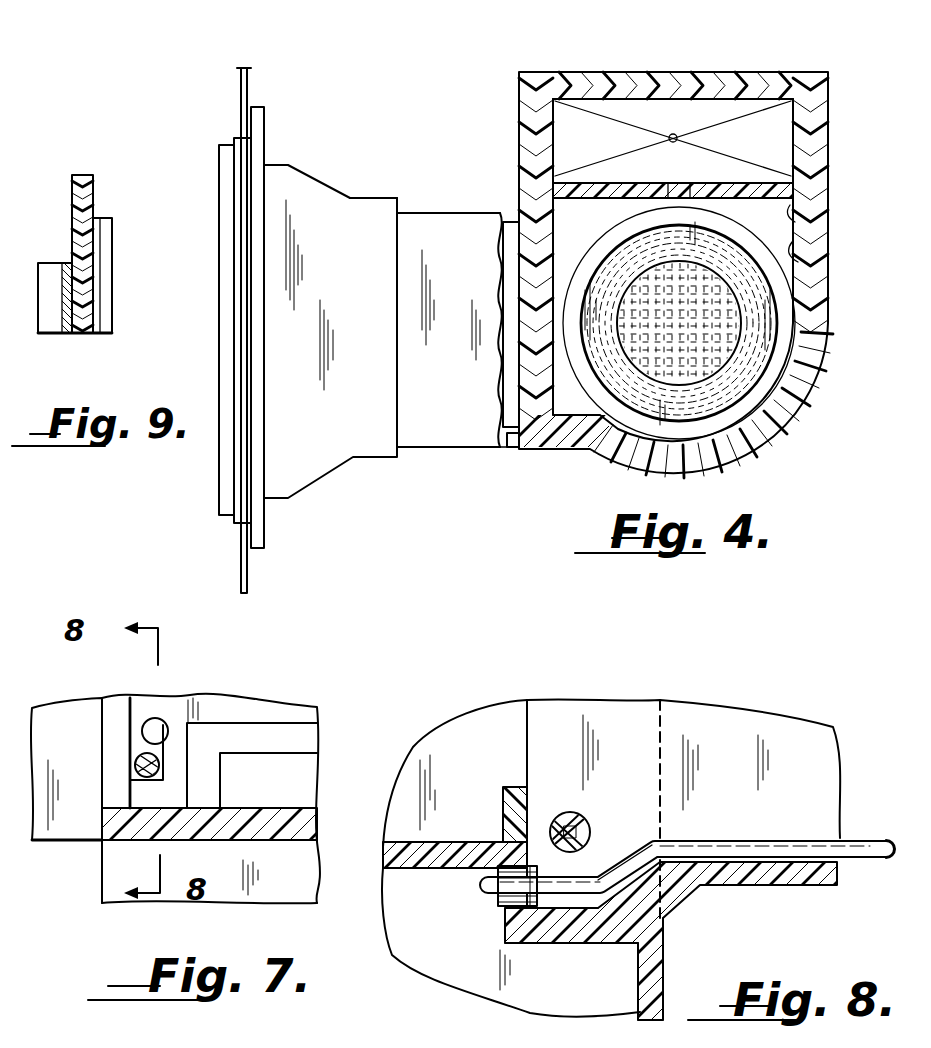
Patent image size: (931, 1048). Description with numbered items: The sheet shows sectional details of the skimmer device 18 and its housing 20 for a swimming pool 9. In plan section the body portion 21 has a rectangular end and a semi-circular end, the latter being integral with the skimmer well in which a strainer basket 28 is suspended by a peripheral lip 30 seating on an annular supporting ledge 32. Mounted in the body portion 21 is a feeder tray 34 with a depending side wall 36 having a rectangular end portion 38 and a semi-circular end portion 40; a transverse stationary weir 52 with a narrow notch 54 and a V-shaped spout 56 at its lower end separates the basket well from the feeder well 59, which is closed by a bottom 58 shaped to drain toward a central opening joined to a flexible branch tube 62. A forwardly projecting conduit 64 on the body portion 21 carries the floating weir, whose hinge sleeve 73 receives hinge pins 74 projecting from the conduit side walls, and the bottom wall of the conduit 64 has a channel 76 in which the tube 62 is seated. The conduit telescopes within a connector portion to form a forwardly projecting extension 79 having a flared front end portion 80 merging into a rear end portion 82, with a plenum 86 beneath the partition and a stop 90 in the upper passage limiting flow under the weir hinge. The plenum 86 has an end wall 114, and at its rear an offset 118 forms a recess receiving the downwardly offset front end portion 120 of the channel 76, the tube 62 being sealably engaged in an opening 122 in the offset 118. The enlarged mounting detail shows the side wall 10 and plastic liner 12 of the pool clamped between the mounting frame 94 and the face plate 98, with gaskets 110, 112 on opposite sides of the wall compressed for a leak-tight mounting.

In FIG. 9, the swimming pool 9 is at (112, 222).
In FIG. 9, the upstanding side wall 10 is at (93, 185).
In FIG. 9, the plastic liner 12 is at (72, 200).
In FIG. 9, the rectangular mounting frame 94 is at (112, 280).
In FIG. 9, the face plate 98 is at (40, 275).
In FIG. 4, the face plate 98 is at (221, 479).
In FIG. 9, the gasket 110 is at (66, 318).
In FIG. 9, the gasket 112 is at (100, 313).
In FIG. 4, the device 18 is at (441, 200).
In FIG. 7, the device 18 is at (328, 730).
In FIG. 8, the device 18 is at (786, 900).
In FIG. 4, the housing 20 is at (486, 445).
In FIG. 4, the body portion 21 is at (830, 131).
In FIG. 7, the body portion 21 is at (52, 846).
In FIG. 4, the basket 28 is at (770, 262).
In FIG. 4, the peripheral lip 30 is at (757, 262).
In FIG. 4, the annular supporting ledge 32 is at (585, 226).
In FIG. 4, the feeder tray 34 is at (838, 190).
In FIG. 4, the side wall 36 is at (804, 262).
In FIG. 4, the rectangular end portion 38 is at (787, 73).
In FIG. 4, the semi-circular end portion 40 is at (780, 421).
In FIG. 4, the stationary weir 52 is at (742, 183).
In FIG. 4, the notch 54 is at (688, 196).
In FIG. 4, the V-shaped spout 56 is at (670, 192).
In FIG. 4, the closed bottom 58 is at (565, 144).
In FIG. 4, the feeder well 59 is at (800, 222).
In FIG. 7, the flexible branch tube 62 is at (138, 768).
In FIG. 8, the flexible branch tube 62 is at (757, 842).
In FIG. 4, the conduit 64 is at (478, 430).
In FIG. 7, the conduit 64 is at (130, 700).
In FIG. 8, the conduit 64 is at (818, 888).
In FIG. 8, the hinge sleeve 73 is at (560, 820).
In FIG. 8, the hinge pins 74 is at (585, 828).
In FIG. 7, the channel 76 is at (160, 722).
In FIG. 8, the channel 76 is at (825, 852).
In FIG. 4, the forwardly projecting extension 79 is at (412, 183).
In FIG. 4, the flared front end portion 80 is at (310, 170).
In FIG. 4, the rear end portion 82 is at (371, 190).
In FIG. 8, the plenum 86 is at (437, 901).
In FIG. 8, the stop 90 is at (503, 803).
In FIG. 8, the end wall 114 is at (667, 955).
In FIG. 8, the offset 118 is at (592, 945).
In FIG. 7, the front end portion 120 is at (172, 797).
In FIG. 8, the front end portion 120 is at (622, 870).
In FIG. 8, the opening 122 is at (492, 897).